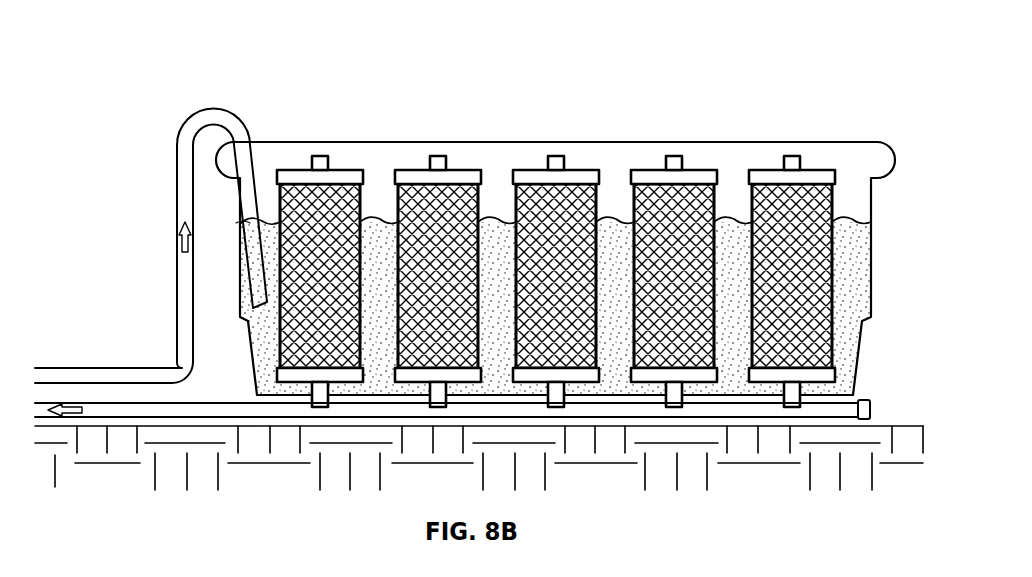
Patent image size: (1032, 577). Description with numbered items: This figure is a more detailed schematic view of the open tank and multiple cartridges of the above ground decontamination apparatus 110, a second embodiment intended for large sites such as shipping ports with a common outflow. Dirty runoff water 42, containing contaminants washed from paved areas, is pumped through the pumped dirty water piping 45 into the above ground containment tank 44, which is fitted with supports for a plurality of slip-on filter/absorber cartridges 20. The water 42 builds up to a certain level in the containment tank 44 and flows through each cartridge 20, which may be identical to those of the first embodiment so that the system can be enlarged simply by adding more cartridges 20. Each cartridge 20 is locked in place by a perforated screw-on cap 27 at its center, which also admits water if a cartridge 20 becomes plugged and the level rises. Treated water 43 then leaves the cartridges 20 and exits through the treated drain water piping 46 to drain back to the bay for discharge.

The above ground decontamination apparatus 110 is at (542, 74).
The slip-on filter/absorber cartridge 20 is at (360, 188).
The screw on cap 27 is at (313, 155).
The dirty water 42 is at (179, 231).
The treated water 43 is at (77, 402).
The containment tank 44 is at (872, 248).
The pumped dirty water piping 45 is at (177, 184).
The treated drain water piping 46 is at (165, 400).